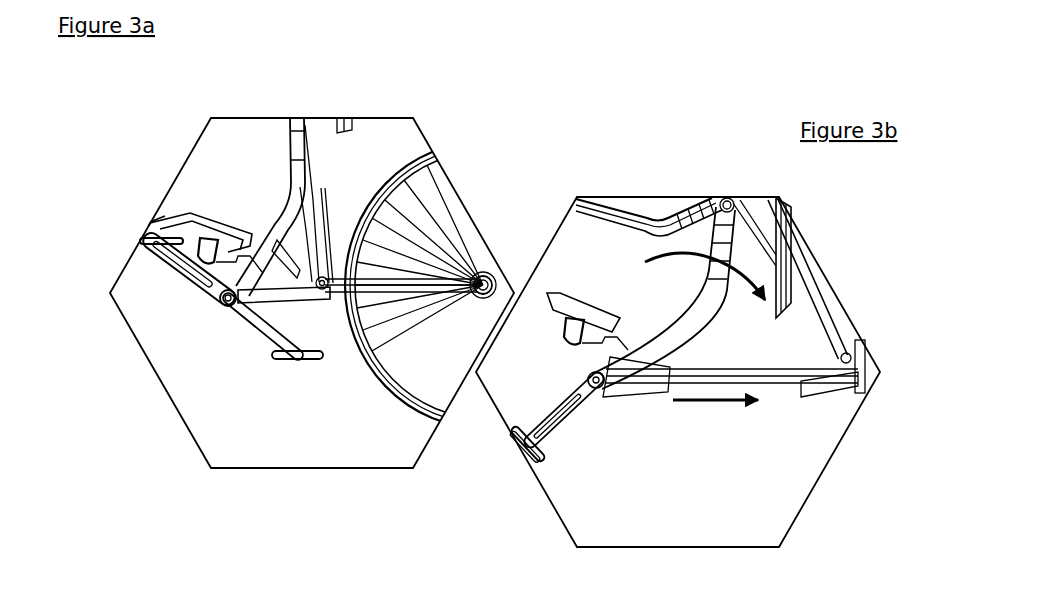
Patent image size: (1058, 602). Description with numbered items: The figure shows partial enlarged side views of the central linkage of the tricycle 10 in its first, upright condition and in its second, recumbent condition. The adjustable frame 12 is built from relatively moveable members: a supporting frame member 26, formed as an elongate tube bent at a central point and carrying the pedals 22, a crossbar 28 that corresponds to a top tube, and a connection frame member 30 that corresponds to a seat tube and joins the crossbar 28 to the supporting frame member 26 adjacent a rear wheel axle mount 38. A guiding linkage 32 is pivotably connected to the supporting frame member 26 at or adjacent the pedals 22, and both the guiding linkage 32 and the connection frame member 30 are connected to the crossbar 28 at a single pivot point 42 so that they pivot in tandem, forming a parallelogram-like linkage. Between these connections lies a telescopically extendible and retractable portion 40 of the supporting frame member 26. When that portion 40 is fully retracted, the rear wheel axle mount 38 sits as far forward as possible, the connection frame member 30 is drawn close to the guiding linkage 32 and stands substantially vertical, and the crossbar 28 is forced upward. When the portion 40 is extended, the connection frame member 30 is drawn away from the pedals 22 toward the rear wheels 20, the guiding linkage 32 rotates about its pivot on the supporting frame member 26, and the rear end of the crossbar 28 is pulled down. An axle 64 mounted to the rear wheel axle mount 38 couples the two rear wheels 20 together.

In FIG. 3A, the tricycle 10 is at (97, 142).
In FIG. 3B, the tricycle 10 is at (866, 258).
In FIG. 3A, the adjustable frame 12 is at (144, 255).
In FIG. 3B, the adjustable frame 12 is at (587, 321).
In FIG. 3A, the rear wheels 20 is at (395, 406).
In FIG. 3A, the pedals 22 is at (280, 364).
In FIG. 3B, the pedals 22 is at (530, 463).
In FIG. 3A, the supporting frame member 26 is at (187, 287).
In FIG. 3B, the crossbar 28 is at (614, 201).
In FIG. 3A, the connection frame member 30 is at (323, 257).
In FIG. 3B, the connection frame member 30 is at (813, 322).
In FIG. 3A, the guiding linkage 32 is at (288, 181).
In FIG. 3B, the guiding linkage 32 is at (696, 290).
In FIG. 3A, the rear wheel axle mount 38 is at (378, 296).
In FIG. 3B, the rear wheel axle mount 38 is at (825, 396).
In FIG. 3B, the telescopically extendible and retractable portion 40 is at (749, 384).
In FIG. 3B, the pivot point 42 is at (727, 200).
In FIG. 3A, the axle 64 is at (487, 268).